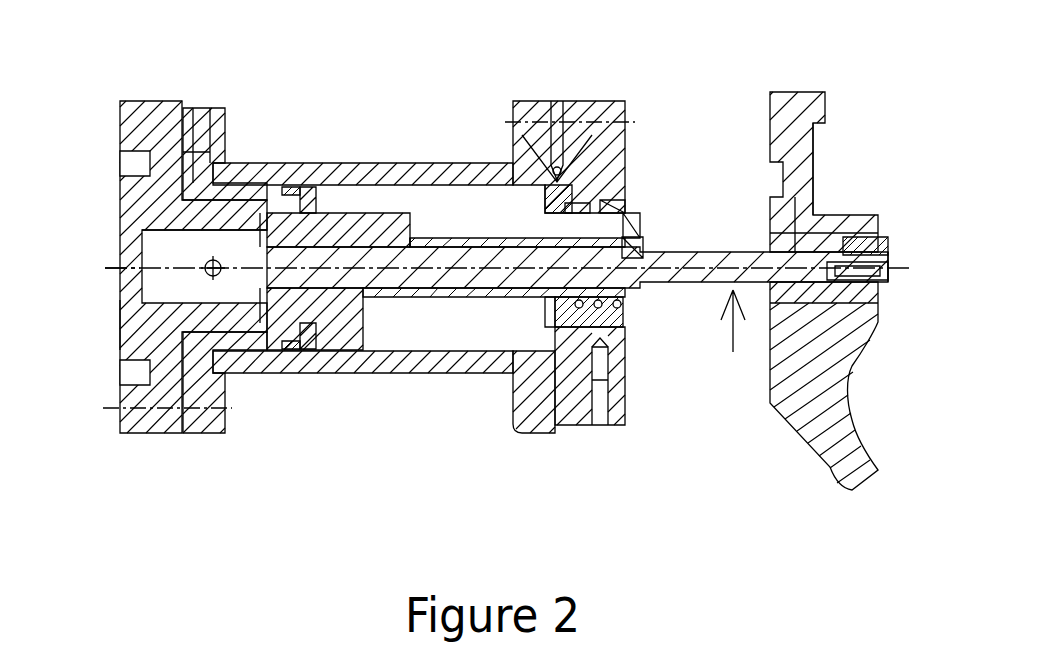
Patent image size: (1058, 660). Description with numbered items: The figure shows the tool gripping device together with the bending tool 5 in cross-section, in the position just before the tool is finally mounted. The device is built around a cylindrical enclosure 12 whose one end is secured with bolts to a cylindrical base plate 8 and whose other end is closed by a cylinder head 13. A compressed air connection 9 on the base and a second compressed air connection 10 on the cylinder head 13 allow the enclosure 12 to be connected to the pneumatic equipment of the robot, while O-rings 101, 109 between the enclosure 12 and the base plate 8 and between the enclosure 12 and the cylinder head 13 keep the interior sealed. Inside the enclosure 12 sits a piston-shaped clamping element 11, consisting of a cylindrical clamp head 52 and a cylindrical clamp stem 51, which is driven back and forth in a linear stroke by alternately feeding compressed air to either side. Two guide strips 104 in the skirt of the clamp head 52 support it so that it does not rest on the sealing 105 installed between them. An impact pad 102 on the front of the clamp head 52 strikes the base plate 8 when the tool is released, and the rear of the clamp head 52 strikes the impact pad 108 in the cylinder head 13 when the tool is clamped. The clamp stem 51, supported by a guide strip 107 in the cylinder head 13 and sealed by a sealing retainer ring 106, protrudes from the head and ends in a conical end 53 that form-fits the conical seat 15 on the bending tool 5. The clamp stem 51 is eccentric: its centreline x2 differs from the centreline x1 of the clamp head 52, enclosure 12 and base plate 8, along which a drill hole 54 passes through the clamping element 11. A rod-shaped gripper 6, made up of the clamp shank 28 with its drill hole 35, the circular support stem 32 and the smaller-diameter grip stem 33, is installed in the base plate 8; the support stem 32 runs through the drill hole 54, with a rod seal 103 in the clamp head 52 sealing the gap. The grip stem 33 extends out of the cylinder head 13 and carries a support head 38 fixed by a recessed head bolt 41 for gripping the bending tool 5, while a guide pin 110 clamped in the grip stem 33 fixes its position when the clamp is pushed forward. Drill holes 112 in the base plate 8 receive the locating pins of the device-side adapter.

The bending tool 5 is at (807, 91).
The rod-shaped gripper 6 is at (733, 338).
The base plate 8 is at (123, 118).
The compressed air connection 9 is at (207, 108).
The compressed air connection 10 is at (593, 427).
The clamping element 11 is at (445, 184).
The cylindrical enclosure 12 is at (350, 163).
The cylinder head 13 is at (577, 98).
The conical seat 15 is at (823, 172).
The clamp shank 28 is at (240, 240).
The support stem 32 is at (495, 278).
The grip stem 33 is at (810, 276).
The drill hole 35 is at (119, 326).
The support head 38 is at (880, 238).
The recessed head bolt 41 is at (888, 278).
The clamp stem 51 is at (396, 212).
The clamp head 52 is at (363, 307).
The conical end 53 is at (625, 212).
The drill hole 54 is at (643, 230).
The O-ring 101 is at (134, 388).
The impact pad 102 is at (268, 342).
The rod seal 103 is at (306, 213).
The guide strips 104 is at (335, 187).
The sealing 105 is at (311, 340).
The sealing retainer ring 106 is at (627, 318).
The guide strip 107 is at (628, 347).
The impact pad 108 is at (550, 326).
The O-ring 109 is at (553, 168).
The guide pin 110 is at (643, 247).
The drill holes 112 is at (132, 167).
The centreline x1 is at (889, 258).
The centreline x2 is at (130, 278).